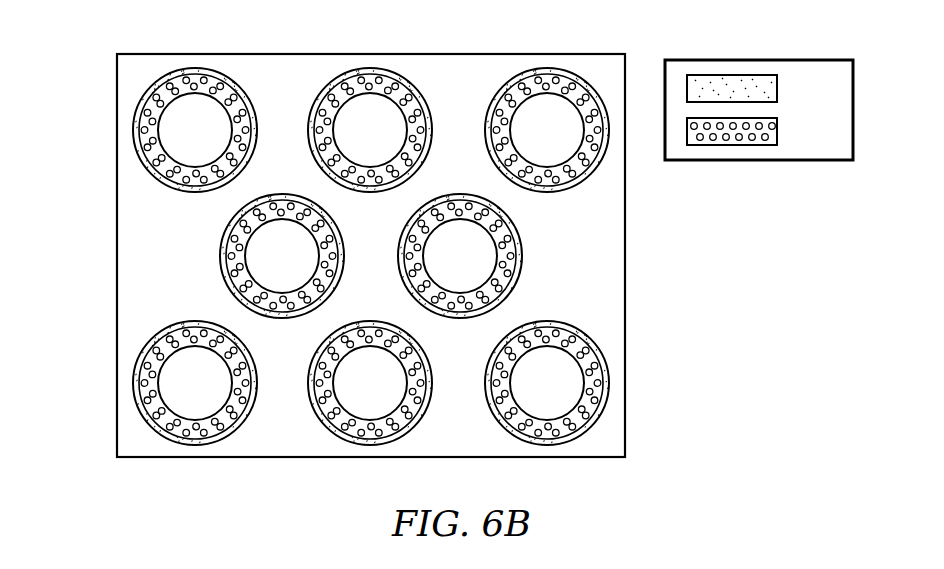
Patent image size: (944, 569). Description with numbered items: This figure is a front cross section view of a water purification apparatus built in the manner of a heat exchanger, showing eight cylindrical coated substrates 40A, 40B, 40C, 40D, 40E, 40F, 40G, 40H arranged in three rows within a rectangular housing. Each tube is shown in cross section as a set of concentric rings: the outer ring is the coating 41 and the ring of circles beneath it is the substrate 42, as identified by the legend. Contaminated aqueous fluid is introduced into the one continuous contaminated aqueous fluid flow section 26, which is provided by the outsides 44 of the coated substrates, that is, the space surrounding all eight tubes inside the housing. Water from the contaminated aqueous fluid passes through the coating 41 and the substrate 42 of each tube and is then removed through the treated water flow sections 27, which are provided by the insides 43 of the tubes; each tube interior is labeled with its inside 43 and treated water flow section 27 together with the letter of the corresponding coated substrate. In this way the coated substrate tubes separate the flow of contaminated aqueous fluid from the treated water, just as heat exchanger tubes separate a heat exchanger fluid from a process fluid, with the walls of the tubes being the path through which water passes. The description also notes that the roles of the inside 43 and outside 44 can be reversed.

The first cylindrical coated substrate 40A is at (157, 192).
The second cylindrical coated substrate 40B is at (325, 78).
The third cylindrical coated substrate 40C is at (505, 78).
The fourth cylindrical coated substrate 40D is at (220, 277).
The fifth cylindrical coated substrate 40E is at (520, 288).
The sixth cylindrical coated substrate 40F is at (143, 337).
The seventh cylindrical coated substrate 40G is at (312, 415).
The eighth cylindrical coated substrate 40H is at (498, 428).
The coating 41 is at (757, 88).
The substrate 42 is at (757, 131).
The inside 43 is at (371, 256).
The treated water flow section 27 is at (553, 409).
The outside 44 is at (371, 255).
The contaminated aqueous fluid flow section 26 is at (596, 273).